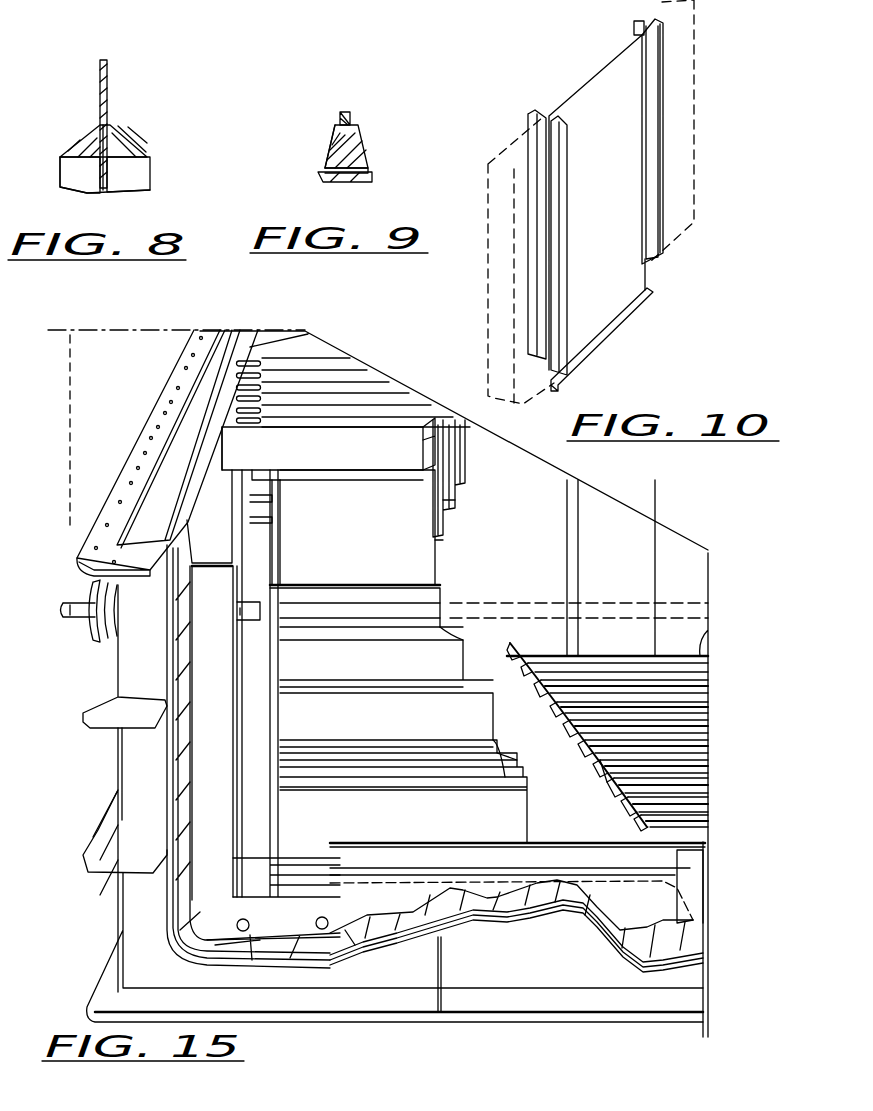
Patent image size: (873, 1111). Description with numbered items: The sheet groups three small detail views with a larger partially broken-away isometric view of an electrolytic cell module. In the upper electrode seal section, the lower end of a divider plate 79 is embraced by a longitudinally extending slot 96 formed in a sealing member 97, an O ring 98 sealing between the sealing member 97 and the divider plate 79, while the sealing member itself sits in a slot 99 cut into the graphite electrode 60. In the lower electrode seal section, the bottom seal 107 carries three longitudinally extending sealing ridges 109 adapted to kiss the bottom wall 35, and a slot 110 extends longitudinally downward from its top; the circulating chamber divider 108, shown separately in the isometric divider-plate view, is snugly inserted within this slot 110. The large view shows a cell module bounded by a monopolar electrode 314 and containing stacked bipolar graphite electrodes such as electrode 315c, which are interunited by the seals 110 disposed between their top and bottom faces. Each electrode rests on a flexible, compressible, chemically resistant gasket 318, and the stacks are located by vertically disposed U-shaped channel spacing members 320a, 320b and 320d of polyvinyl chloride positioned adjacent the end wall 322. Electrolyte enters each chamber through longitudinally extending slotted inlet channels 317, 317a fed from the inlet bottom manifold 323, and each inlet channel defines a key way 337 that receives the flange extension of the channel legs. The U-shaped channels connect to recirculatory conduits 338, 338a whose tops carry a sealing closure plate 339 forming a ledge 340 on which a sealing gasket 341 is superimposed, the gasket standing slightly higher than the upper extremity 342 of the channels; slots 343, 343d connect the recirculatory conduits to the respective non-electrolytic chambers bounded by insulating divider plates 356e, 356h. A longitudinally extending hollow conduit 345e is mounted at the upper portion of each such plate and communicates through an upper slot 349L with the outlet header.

In FIG. 8, the divider plate 79 is at (107, 72).
In FIG. 8, the slot 96 is at (113, 142).
In FIG. 8, the sealing member 97 is at (143, 155).
In FIG. 8, the O ring 98 is at (107, 133).
In FIG. 8, the slot 99 is at (103, 172).
In FIG. 8, the graphite electrode 60 is at (133, 183).
In FIG. 9, the circulating chamber divider 108 is at (350, 113).
In FIG. 10, the circulating chamber divider 108 is at (621, 164).
In FIG. 9, the bottom seal 107 is at (357, 142).
In FIG. 10, the bottom seal 107 is at (621, 317).
In FIG. 9, the slot 110 is at (338, 128).
In FIG. 15, the slot 110 is at (473, 682).
In FIG. 9, the sealing ridges 109 is at (362, 168).
In FIG. 10, the sealing ridges 109 is at (657, 92).
In FIG. 9, the bottom wall 35 is at (337, 180).
In FIG. 15, the slot 349L is at (243, 360).
In FIG. 15, the U-shaped channel spacing member 320d is at (270, 477).
In FIG. 15, the U-shaped channel spacing member 320b is at (267, 502).
In FIG. 15, the U-shaped channel spacing member 320a is at (260, 520).
In FIG. 15, the upper extremity 342 is at (260, 530).
In FIG. 15, the slot 343 is at (283, 535).
In FIG. 15, the sealing gasket 341 is at (227, 553).
In FIG. 15, the slot 343d is at (283, 481).
In FIG. 15, the longitudinally extending hollow conduit 345e is at (437, 440).
In FIG. 15, the divider plate 356h is at (447, 505).
In FIG. 15, the divider plate 356e is at (437, 550).
In FIG. 15, the graphite electrode 315c is at (440, 583).
In FIG. 15, the monopolar electrode 314 is at (593, 558).
In FIG. 15, the end wall 322 is at (167, 573).
In FIG. 15, the ledge 340 is at (213, 570).
In FIG. 15, the sealing closure plate 339 is at (190, 627).
In FIG. 15, the recirculatory conduit 338 is at (233, 645).
In FIG. 15, the recirculatory conduit 338a is at (240, 677).
In FIG. 15, the slotted inlet channel 317 is at (600, 720).
In FIG. 15, the slotted inlet channel 317a is at (610, 758).
In FIG. 15, the inlet bottom manifold 323 is at (608, 779).
In FIG. 15, the gasket 318 is at (511, 886).
In FIG. 15, the key way 337 is at (200, 790).